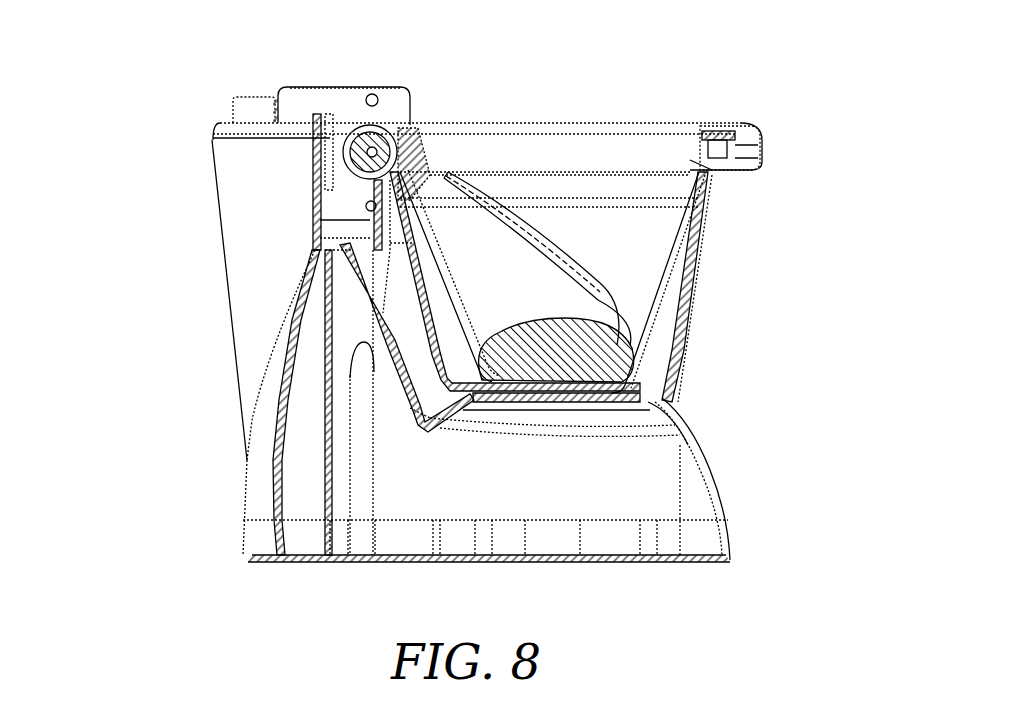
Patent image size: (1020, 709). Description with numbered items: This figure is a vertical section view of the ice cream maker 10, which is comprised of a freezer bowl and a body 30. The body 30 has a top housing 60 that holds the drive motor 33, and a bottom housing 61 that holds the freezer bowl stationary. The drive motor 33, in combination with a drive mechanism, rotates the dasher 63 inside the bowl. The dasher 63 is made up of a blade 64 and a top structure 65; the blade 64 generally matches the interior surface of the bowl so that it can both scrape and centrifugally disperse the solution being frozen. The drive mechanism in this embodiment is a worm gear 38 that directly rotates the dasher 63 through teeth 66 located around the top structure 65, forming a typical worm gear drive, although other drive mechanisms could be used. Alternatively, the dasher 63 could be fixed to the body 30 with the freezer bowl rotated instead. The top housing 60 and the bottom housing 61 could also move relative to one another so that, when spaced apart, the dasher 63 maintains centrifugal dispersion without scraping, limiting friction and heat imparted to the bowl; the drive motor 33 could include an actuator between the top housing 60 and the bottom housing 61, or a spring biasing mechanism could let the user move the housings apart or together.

The ice cream maker 10 is at (802, 89).
The body 30 is at (132, 342).
The drive motor 33 is at (309, 98).
The worm gear 38 is at (360, 148).
The top housing 60 is at (256, 203).
The bottom housing 61 is at (268, 496).
The dasher 63 is at (625, 258).
The blade 64 is at (510, 222).
The top structure 65 is at (572, 190).
The teeth 66 is at (712, 150).